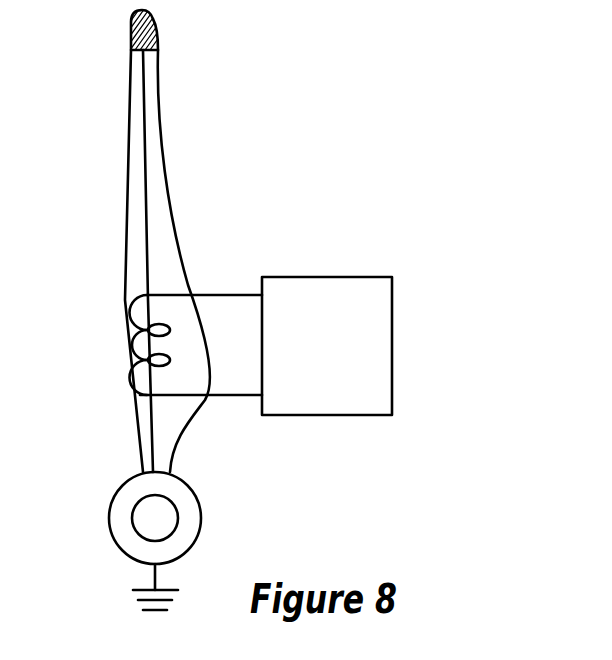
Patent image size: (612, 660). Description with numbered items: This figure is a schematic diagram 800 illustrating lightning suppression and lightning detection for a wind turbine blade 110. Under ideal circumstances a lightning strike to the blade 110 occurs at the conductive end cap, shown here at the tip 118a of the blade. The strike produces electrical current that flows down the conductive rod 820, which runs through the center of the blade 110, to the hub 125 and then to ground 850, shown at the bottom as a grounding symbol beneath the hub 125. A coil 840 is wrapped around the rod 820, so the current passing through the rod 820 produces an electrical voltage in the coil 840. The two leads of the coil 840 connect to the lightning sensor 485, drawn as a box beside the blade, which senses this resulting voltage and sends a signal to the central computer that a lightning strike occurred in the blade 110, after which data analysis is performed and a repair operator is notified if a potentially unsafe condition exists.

The plasma generation system 800 is at (248, 66).
The electrode tip 118a is at (130, 26).
The blade 110 is at (161, 163).
The conductive rod 820 is at (147, 212).
The coil 840 is at (137, 301).
The lightning sensor 485 is at (347, 357).
The hub 125 is at (113, 492).
The ground 850 is at (147, 588).